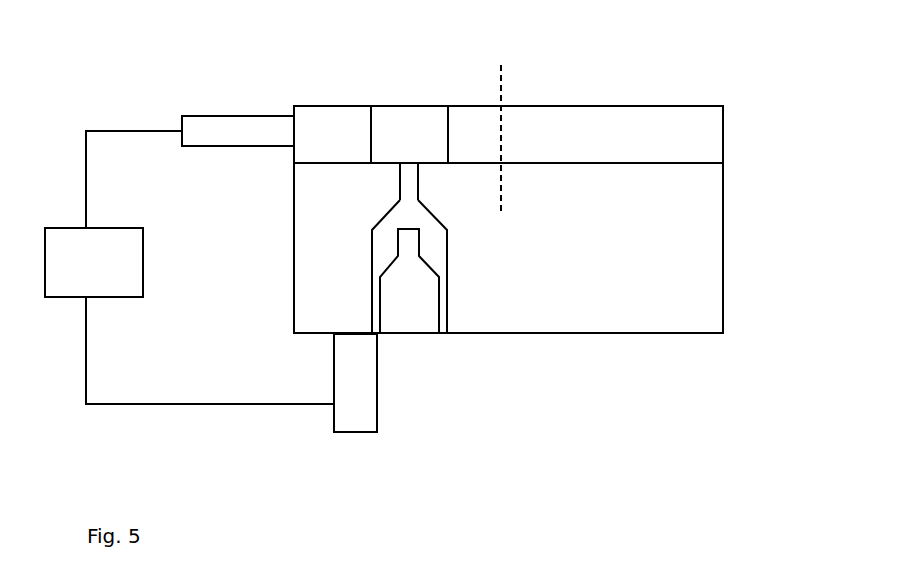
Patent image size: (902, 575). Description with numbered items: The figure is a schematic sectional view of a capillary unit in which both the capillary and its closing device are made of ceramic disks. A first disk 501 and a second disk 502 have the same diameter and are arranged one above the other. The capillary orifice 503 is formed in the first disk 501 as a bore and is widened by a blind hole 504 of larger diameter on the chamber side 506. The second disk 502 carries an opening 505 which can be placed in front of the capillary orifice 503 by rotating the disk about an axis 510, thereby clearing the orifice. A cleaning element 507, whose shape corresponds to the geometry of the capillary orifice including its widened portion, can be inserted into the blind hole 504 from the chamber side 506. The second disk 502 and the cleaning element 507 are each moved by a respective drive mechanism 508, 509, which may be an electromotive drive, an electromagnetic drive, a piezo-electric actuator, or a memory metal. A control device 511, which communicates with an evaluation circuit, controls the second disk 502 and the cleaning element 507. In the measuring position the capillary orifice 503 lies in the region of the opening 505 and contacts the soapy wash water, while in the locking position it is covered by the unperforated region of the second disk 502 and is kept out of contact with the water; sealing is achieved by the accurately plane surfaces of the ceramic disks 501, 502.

The first disk 501 is at (685, 257).
The second disk 502 is at (703, 135).
The capillary orifice 503 is at (398, 186).
The blind hole 504 is at (380, 229).
The opening 505 is at (425, 115).
The chamber side 506 is at (438, 271).
The cleaning element 507 is at (430, 330).
The drive mechanism 508 is at (220, 110).
The drive mechanism 509 is at (350, 437).
The axis 510 is at (508, 90).
The control device 511 is at (61, 306).